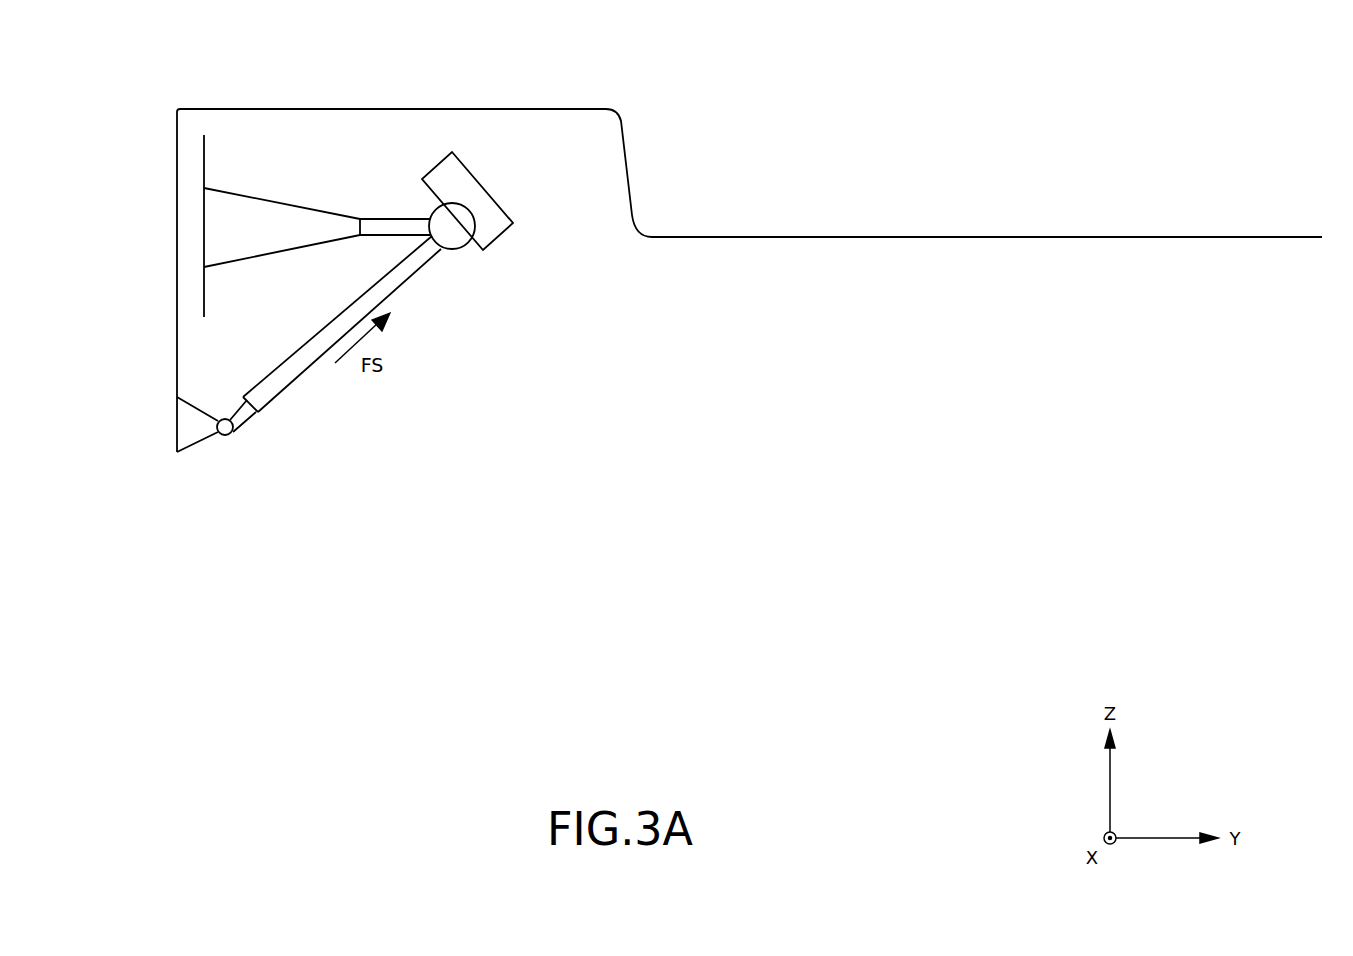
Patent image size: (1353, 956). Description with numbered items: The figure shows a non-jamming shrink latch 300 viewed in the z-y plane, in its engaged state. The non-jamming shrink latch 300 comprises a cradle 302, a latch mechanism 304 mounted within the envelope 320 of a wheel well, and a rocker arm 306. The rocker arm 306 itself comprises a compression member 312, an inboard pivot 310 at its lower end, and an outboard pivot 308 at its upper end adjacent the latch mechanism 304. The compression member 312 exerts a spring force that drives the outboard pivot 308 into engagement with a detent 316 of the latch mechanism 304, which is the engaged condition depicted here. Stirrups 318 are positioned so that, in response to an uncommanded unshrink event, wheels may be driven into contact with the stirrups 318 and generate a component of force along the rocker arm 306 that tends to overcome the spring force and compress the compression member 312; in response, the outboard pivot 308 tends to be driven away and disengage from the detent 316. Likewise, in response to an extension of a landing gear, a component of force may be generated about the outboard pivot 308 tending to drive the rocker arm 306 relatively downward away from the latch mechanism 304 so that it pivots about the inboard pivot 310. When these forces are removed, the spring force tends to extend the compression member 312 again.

The non-jamming shrink latch 300 is at (638, 92).
The cradle 302 is at (203, 201).
The latch mechanism 304 is at (470, 183).
The rocker arm 306 is at (352, 298).
The outboard pivot 308 is at (452, 250).
The inboard pivot 310 is at (196, 432).
The compression member 312 is at (236, 404).
The detent 316 is at (441, 190).
The stirrups 318 is at (201, 143).
The envelope 320 is at (733, 240).